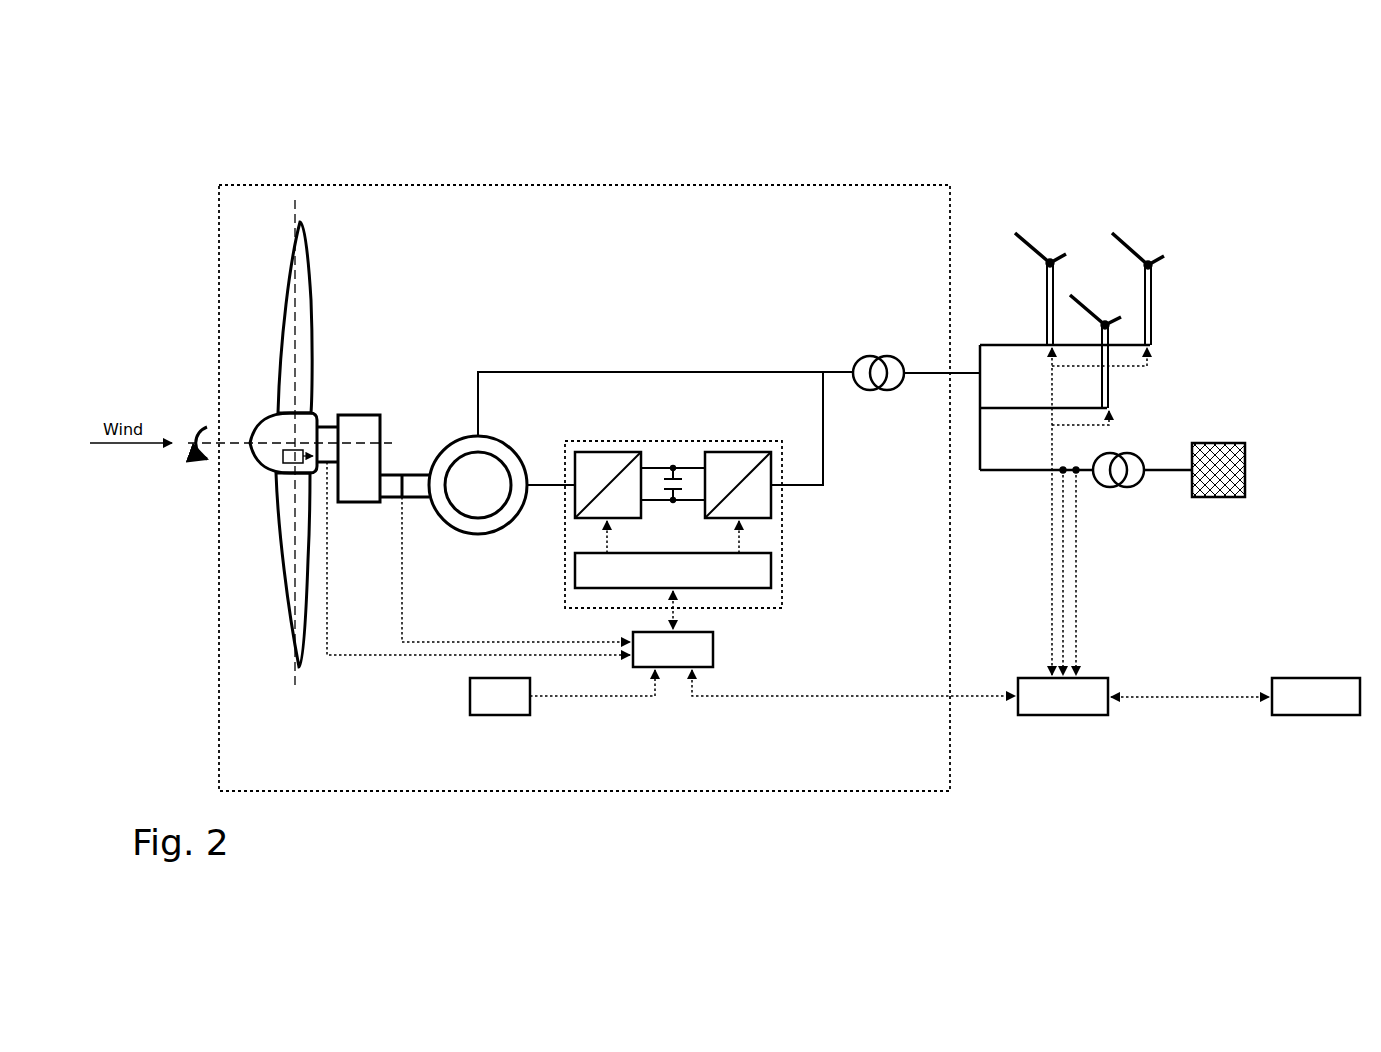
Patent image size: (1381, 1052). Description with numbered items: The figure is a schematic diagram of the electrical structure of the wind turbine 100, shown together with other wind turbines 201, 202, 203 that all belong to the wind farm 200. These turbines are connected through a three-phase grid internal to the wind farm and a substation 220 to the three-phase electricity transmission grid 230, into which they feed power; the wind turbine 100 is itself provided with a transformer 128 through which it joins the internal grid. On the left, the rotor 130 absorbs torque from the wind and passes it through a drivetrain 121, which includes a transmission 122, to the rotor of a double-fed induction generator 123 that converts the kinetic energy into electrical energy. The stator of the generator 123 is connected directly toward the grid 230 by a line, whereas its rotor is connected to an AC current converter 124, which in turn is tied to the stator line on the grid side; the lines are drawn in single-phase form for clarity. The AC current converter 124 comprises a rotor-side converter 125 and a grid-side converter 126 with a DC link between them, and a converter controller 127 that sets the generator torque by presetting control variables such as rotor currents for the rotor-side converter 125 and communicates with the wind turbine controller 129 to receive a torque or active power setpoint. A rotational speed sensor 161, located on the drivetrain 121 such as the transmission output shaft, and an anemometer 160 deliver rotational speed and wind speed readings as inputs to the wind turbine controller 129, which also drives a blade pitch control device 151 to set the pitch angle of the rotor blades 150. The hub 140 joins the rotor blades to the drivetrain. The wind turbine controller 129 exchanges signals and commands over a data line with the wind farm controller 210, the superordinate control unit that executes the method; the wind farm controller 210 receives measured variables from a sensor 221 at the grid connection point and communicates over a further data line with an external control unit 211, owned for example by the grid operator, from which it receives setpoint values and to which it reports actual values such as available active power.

The wind turbine 100 is at (568, 185).
The drivetrain 121 is at (378, 515).
The transmission 122 is at (363, 405).
The double-fed induction generator 123 is at (450, 430).
The AC current converter 124 is at (689, 520).
The rotor-side converter 125 is at (604, 450).
The grid-side converter 126 is at (742, 450).
The converter controller 127 is at (573, 580).
The transformer 128 is at (863, 352).
The wind turbine controller 129 is at (713, 645).
The rotor 130 is at (280, 305).
The hub 140 is at (265, 418).
The rotor blades 150 is at (283, 548).
The blade pitch control device 151 is at (273, 476).
The anemometer 160 is at (500, 717).
The rotational speed sensor 161 is at (398, 466).
The wind farm 200 is at (975, 138).
The wind turbine 201 is at (1048, 255).
The wind turbine 202 is at (1095, 300).
The wind turbine 203 is at (1138, 248).
The wind farm controller 210 is at (1075, 706).
The external control unit 211 is at (1315, 706).
The substation 220 is at (1125, 492).
The sensor 221 is at (1063, 478).
The three-phase electricity transmission grid 230 is at (1222, 500).